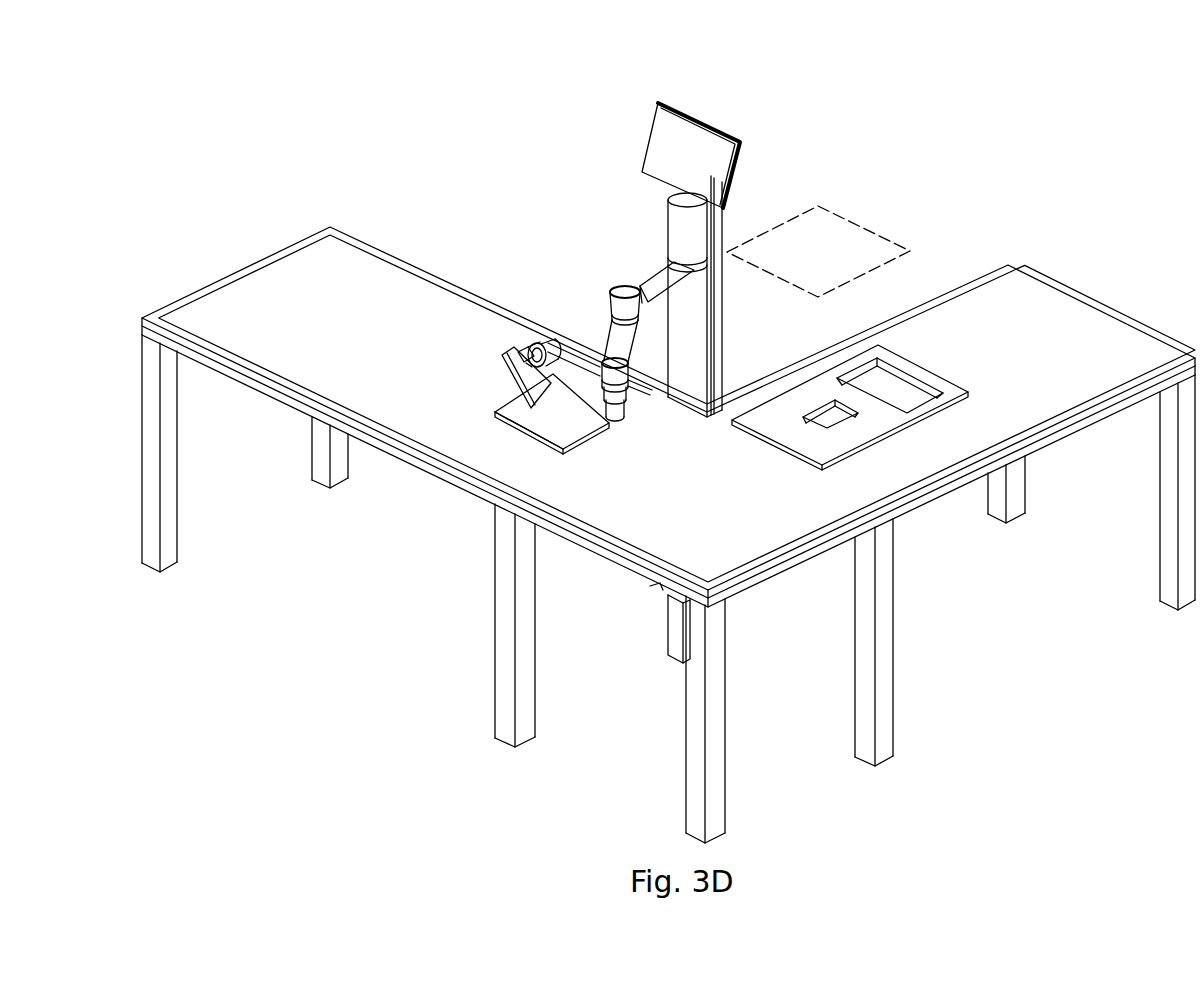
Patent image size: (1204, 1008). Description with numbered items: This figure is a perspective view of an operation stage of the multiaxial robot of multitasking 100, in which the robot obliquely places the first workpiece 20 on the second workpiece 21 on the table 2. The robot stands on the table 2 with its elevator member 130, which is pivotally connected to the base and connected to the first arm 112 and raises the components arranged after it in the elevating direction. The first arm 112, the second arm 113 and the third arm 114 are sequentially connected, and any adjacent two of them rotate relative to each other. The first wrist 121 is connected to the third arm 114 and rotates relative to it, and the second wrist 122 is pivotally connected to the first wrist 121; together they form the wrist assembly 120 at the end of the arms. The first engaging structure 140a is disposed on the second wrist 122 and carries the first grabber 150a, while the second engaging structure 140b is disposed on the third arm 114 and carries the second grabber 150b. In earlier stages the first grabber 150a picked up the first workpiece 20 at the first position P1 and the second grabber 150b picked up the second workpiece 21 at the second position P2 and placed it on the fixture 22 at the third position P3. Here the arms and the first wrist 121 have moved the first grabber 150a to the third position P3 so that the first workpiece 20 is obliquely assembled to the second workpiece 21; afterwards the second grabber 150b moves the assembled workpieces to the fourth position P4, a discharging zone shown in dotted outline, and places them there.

The table 2 is at (363, 240).
The first workpiece 20 is at (506, 354).
The second workpiece 21 is at (500, 410).
The fixture 22 is at (537, 437).
The multiaxial robot of multitasking 100 is at (587, 340).
The first arm 112 is at (650, 287).
The second arm 113 is at (612, 300).
The third arm 114 is at (572, 363).
The hand 120 is at (551, 229).
The first wrist 121 is at (545, 345).
The second wrist 122 is at (532, 348).
The elevator member 130 is at (668, 216).
The first engaging structure 140a is at (530, 358).
The second engaging structure 140b is at (630, 425).
The first grabber 150a is at (523, 362).
The second grabber 150b is at (610, 420).
The first position P1 is at (847, 433).
The second position P2 is at (913, 425).
The third position P3 is at (502, 422).
The fourth position P4 is at (876, 234).